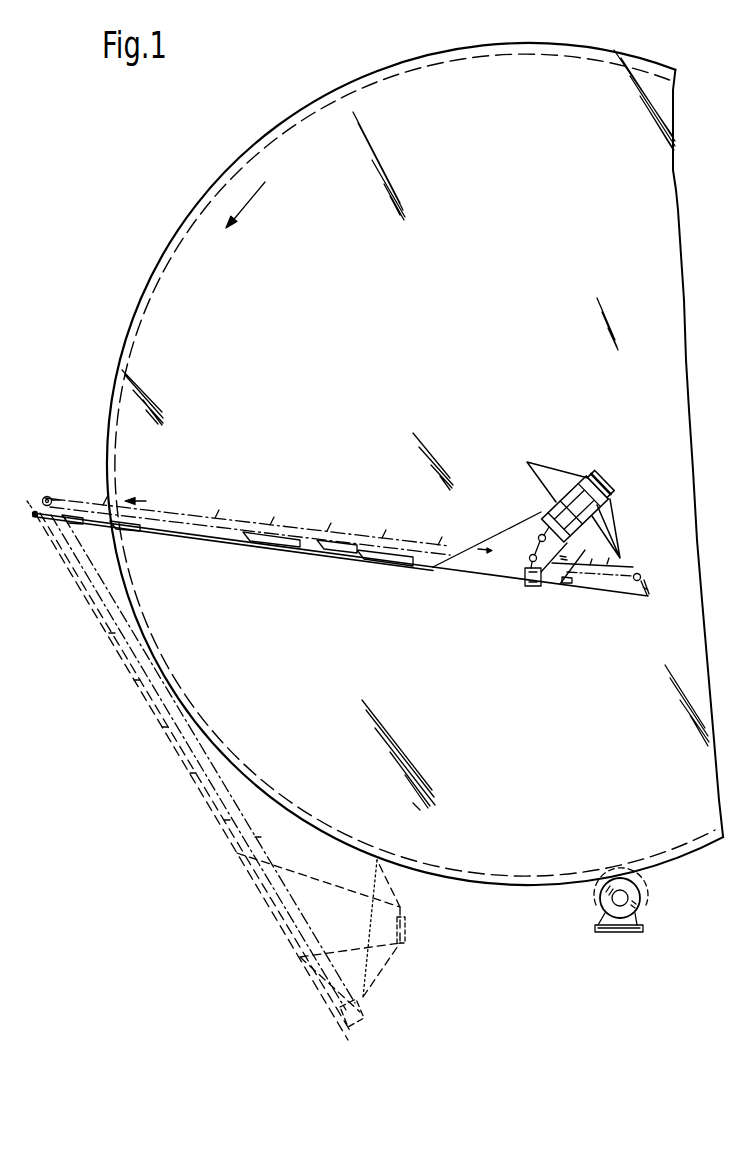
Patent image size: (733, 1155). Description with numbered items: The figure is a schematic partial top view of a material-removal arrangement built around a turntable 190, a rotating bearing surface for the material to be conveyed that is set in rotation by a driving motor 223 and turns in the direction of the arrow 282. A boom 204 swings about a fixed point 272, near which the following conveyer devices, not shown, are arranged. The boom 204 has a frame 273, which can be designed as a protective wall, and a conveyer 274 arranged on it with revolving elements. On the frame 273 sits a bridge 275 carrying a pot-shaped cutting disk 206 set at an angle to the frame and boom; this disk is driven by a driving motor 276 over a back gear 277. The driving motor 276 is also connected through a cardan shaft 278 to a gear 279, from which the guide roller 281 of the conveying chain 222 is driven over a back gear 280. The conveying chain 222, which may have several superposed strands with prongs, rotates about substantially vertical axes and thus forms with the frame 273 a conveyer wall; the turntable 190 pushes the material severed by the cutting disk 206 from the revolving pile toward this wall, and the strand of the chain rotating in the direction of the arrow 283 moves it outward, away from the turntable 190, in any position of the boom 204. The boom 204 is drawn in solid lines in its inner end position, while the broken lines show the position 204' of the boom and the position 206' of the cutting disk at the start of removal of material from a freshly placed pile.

The turntable 190 is at (297, 113).
The arrow 282 is at (245, 200).
The boom 204 is at (337, 525).
The position of the boom 204' is at (217, 776).
The pot-shaped cutting disk 206 is at (573, 491).
The position of the cutting disk 206' is at (406, 929).
The conveying chain 222 is at (324, 533).
The fixed point 272 is at (48, 496).
The frame 273 is at (162, 540).
The conveyer 274 is at (230, 518).
The bridge 275 is at (472, 547).
The driving motor 276 is at (601, 505).
The back gear 277 is at (604, 485).
The cardan shaft 278 is at (522, 530).
The gear 279 is at (525, 586).
The back gear 280 is at (621, 584).
The guide roller 281 is at (648, 588).
The arrow 283 is at (146, 501).
The driving motor 223 is at (605, 908).